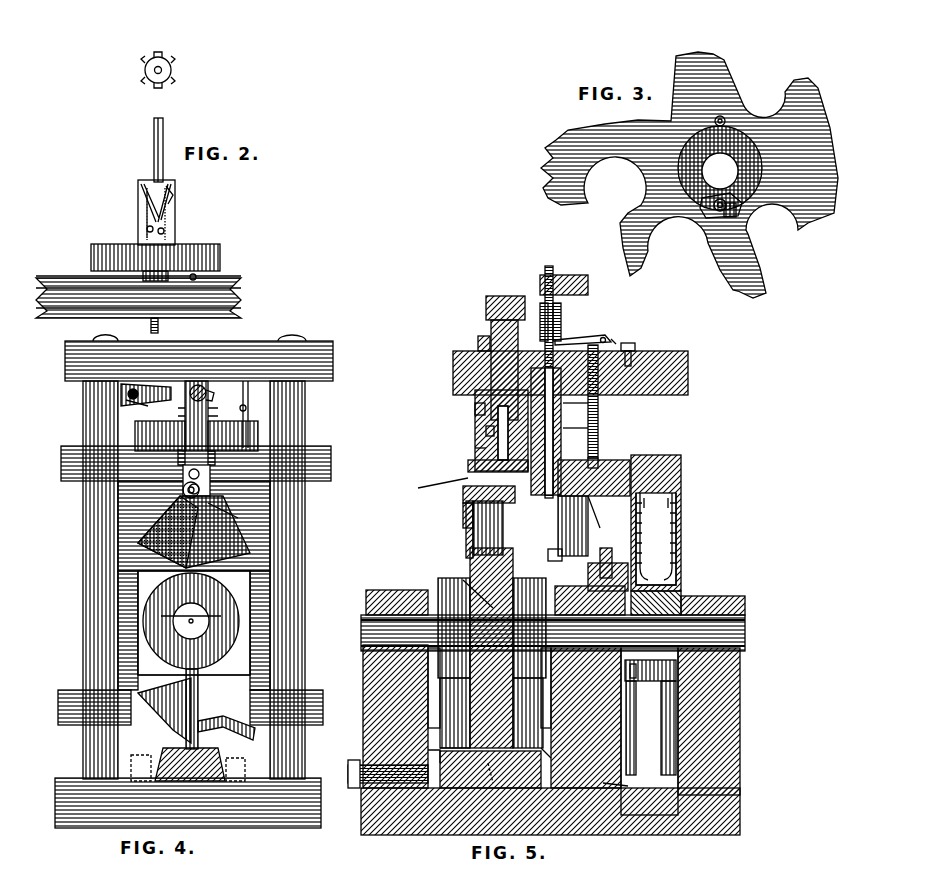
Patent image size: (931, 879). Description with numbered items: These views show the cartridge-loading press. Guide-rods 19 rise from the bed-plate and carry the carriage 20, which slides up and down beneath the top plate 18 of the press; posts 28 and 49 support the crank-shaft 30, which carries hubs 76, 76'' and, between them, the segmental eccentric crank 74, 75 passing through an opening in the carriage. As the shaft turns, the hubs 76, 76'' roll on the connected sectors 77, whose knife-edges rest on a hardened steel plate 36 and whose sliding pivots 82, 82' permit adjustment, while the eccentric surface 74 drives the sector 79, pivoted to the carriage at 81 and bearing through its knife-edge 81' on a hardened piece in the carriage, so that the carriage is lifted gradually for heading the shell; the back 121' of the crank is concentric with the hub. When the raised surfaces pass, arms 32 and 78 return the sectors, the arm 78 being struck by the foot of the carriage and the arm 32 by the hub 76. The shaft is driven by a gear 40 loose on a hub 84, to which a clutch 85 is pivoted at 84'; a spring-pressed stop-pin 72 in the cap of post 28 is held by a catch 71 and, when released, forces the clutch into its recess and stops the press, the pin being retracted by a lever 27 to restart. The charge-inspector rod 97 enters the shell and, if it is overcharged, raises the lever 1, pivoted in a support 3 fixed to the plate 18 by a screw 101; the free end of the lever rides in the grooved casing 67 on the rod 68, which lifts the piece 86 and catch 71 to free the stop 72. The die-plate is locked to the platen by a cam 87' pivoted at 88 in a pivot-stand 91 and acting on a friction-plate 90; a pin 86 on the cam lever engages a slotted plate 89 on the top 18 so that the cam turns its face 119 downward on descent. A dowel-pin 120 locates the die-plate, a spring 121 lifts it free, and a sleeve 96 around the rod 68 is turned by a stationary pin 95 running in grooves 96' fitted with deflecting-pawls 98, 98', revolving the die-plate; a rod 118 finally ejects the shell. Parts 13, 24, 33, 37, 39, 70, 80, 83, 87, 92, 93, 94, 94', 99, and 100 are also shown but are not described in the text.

In FIG. 5, the lever 1 is at (598, 329).
In FIG. 5, the support 3 is at (606, 334).
In FIG. 4, the top plate 13 is at (199, 358).
In FIG. 5, the top plate of the press 18 is at (570, 373).
In FIG. 5, the guide-rods 19 is at (520, 421).
In FIG. 2, the carriage 20 is at (138, 298).
In FIG. 4, the carriage 20 is at (230, 582).
In FIG. 5, the carriage 20 is at (550, 604).
In FIG. 2, the gear 24 is at (155, 262).
In FIG. 4, the gear 24 is at (196, 436).
In FIG. 5, the lever 27 is at (700, 533).
In FIG. 5, the post 28 is at (588, 687).
In FIG. 3, the crank-shaft 30 is at (720, 168).
In FIG. 5, the crank-shaft 30 is at (553, 633).
In FIG. 4, the arm 32 is at (125, 533).
In FIG. 5, the arm 32 is at (458, 527).
In FIG. 4, the base plate 33 is at (188, 803).
In FIG. 5, the base plate 33 is at (550, 811).
In FIG. 4, the hardened steel plate 36 is at (189, 757).
In FIG. 5, the hardened steel plate 36 is at (490, 769).
In FIG. 5, the screw 37 is at (388, 774).
In FIG. 4, the anvil stops 39 is at (188, 768).
In FIG. 5, the anvil stops 39 is at (499, 770).
In FIG. 3, the gear 40 is at (689, 175).
In FIG. 5, the gear 40 is at (656, 539).
In FIG. 5, the post 49 is at (709, 721).
In FIG. 5, the fixed casing 67 is at (553, 311).
In FIG. 2, the rod 68 is at (156, 162).
In FIG. 5, the rod 68 is at (545, 262).
In FIG. 5, the nut 70 is at (553, 300).
In FIG. 5, the catch 71 is at (598, 535).
In FIG. 3, the stop-pin 72 is at (716, 110).
In FIG. 5, the stop-pin 72 is at (675, 563).
In FIG. 4, the eccentric part of segmental crank 74 is at (245, 553).
In FIG. 4, the segmental eccentric crank 75 is at (243, 570).
In FIG. 4, the hub 76 is at (191, 621).
In FIG. 5, the hub 76 is at (454, 663).
In FIG. 5, the gear 76'' is at (529, 663).
In FIG. 4, the sector 77 is at (164, 710).
In FIG. 5, the sector 77 is at (488, 528).
In FIG. 4, the arm 78 is at (215, 703).
In FIG. 5, the arm 78 is at (455, 735).
In FIG. 4, the sector 79 is at (226, 723).
In FIG. 4, the plate 80 is at (75, 452).
In FIG. 5, the plate 80 is at (458, 500).
In FIG. 4, the pivot 81 is at (263, 498).
In FIG. 5, the pivot 81 is at (471, 490).
In FIG. 4, the knife-edge 81' is at (278, 516).
In FIG. 5, the knife-edge 81' is at (433, 487).
In FIG. 5, the sliding pivot 82 is at (404, 812).
In FIG. 5, the sliding pivot 82' is at (635, 827).
In FIG. 5, the support 83 is at (522, 745).
In FIG. 3, the hub 84 is at (751, 233).
In FIG. 5, the hub 84 is at (717, 636).
In FIG. 5, the clutch pivot 84' is at (721, 718).
In FIG. 3, the clutch 85 is at (728, 203).
In FIG. 5, the clutch 85 is at (668, 672).
In FIG. 4, the pin 86 is at (133, 378).
In FIG. 5, the pin 86 is at (555, 554).
In FIG. 5, the housing 87 is at (479, 426).
In FIG. 4, the cam 87' is at (229, 360).
In FIG. 4, the cam pivot 88 is at (206, 384).
In FIG. 5, the cam pivot 88 is at (467, 398).
In FIG. 4, the slotted plate 89 is at (118, 397).
In FIG. 5, the friction-plate 90 is at (478, 420).
In FIG. 5, the pivot-stand 91 is at (489, 408).
In FIG. 5, the block 92 is at (505, 358).
In FIG. 5, the sleeve 93 is at (467, 441).
In FIG. 5, the collar 94 is at (477, 467).
In FIG. 5, the collar 94' is at (621, 453).
In FIG. 2, the pin 95 is at (133, 198).
In FIG. 5, the pin 95 is at (560, 421).
In FIG. 2, the sleeve 96 is at (229, 269).
In FIG. 5, the sleeve 96 is at (623, 401).
In FIG. 2, the grooves 96' is at (180, 137).
In FIG. 5, the rod 97 is at (590, 412).
In FIG. 2, the deflecting-pawl 98 is at (190, 191).
In FIG. 2, the deflecting-pawl 98' is at (131, 212).
In FIG. 4, the gear 99 is at (45, 650).
In FIG. 4, the pin 100 is at (228, 604).
In FIG. 5, the screw 101 is at (627, 338).
In FIG. 4, the rod 118 is at (240, 404).
In FIG. 4, the cam face 119 is at (207, 423).
In FIG. 2, the dowel-pin 120 is at (233, 273).
In FIG. 5, the dowel-pin 120 is at (592, 526).
In FIG. 2, the spring 121 is at (133, 323).
In FIG. 5, the spring 121 is at (595, 516).
In FIG. 5, the back of segmental crank 121' is at (454, 578).